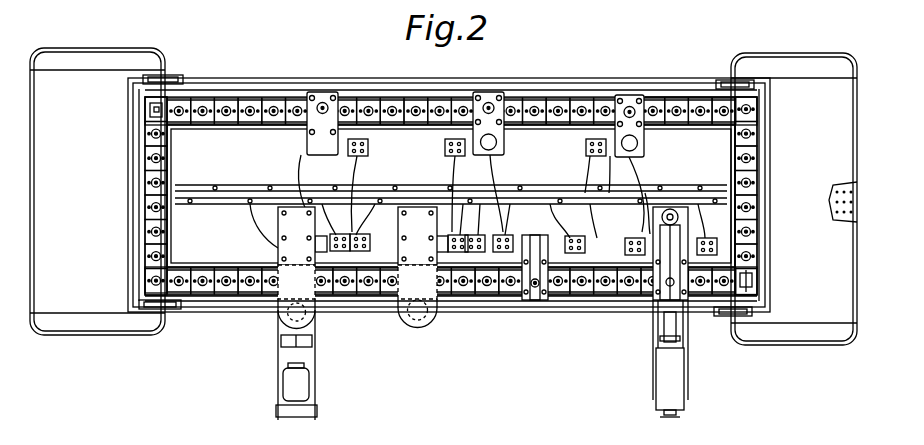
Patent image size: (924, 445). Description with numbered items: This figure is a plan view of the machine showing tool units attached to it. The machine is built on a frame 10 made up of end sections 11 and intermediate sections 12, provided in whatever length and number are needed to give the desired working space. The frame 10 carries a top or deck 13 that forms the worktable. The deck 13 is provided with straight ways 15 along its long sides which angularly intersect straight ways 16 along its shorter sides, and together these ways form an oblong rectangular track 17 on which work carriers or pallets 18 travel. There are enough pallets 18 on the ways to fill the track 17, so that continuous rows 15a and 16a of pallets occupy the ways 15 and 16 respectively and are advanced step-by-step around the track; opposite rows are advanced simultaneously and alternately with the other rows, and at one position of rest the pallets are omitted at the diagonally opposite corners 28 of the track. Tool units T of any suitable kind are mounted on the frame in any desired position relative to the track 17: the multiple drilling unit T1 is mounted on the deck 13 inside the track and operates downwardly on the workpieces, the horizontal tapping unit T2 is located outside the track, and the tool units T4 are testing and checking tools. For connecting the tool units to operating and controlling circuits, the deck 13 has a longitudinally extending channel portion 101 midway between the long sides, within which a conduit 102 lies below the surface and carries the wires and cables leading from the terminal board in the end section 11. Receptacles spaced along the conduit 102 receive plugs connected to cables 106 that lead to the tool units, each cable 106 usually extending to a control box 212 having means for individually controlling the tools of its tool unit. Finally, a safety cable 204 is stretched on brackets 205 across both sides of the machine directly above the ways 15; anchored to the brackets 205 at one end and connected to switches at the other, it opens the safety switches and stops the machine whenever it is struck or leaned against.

The frame 10 is at (284, 77).
The end sections 11 is at (66, 76).
The intermediate sections 12 is at (480, 306).
The deck 13 is at (382, 132).
The straight ways 15 is at (549, 98).
The rows of pallets 15a is at (427, 107).
The straight ways 16 is at (139, 206).
The rows of pallets 16a is at (148, 152).
The rectangular track 17 is at (657, 100).
The pallets 18 is at (227, 99).
The diagonally opposite corners 28 is at (148, 108).
The channel portion 101 is at (698, 192).
The conduit 102 is at (258, 176).
The cables 106 is at (446, 177).
The cable 204 is at (463, 84).
The brackets 205 is at (170, 76).
The control box 212 is at (443, 148).
The tool units T is at (320, 89).
The multiple drilling unit T1 is at (273, 323).
The horizontal tapping unit T2 is at (325, 372).
The testing and checking tool units T4 is at (543, 312).